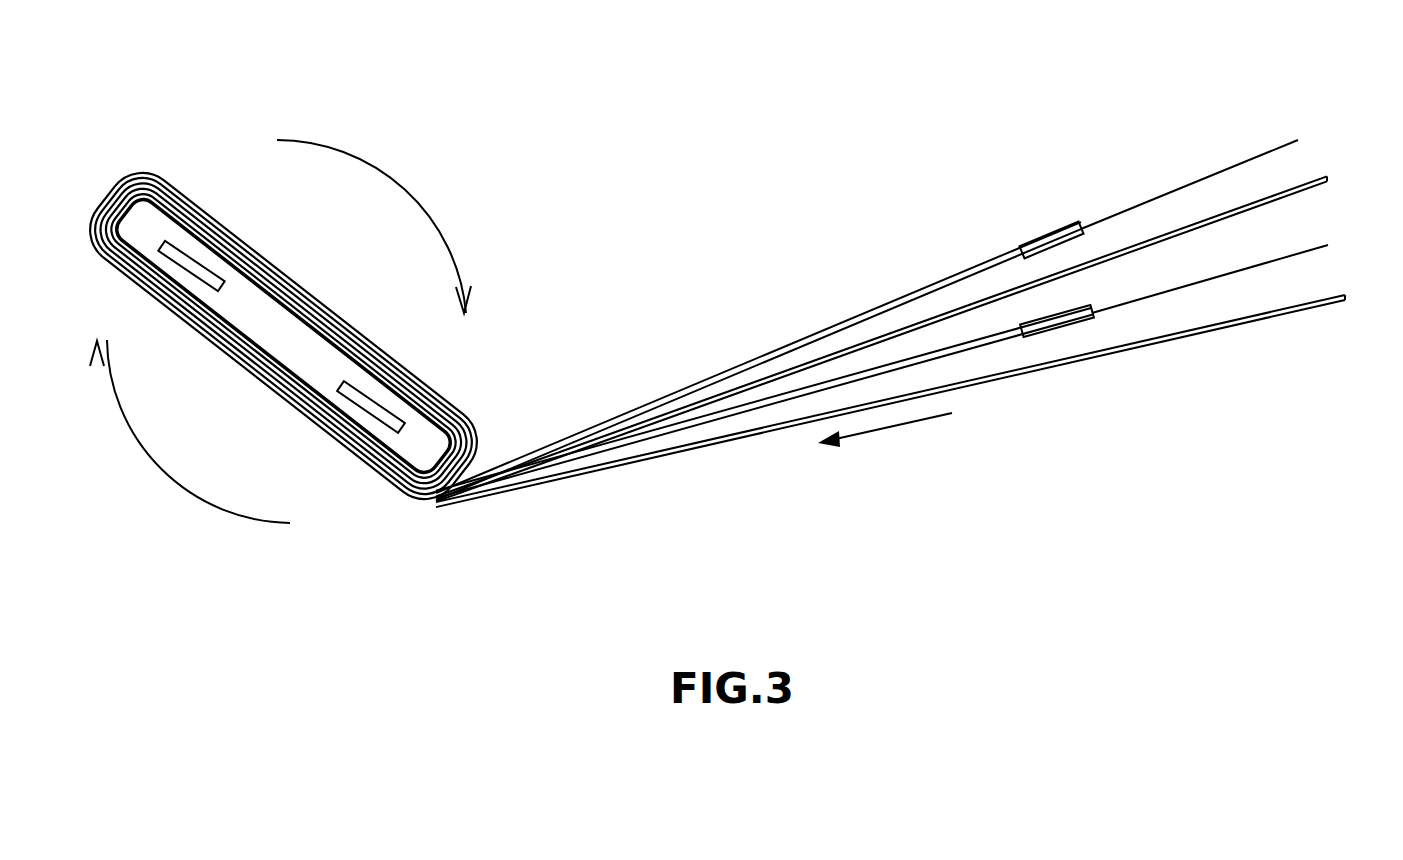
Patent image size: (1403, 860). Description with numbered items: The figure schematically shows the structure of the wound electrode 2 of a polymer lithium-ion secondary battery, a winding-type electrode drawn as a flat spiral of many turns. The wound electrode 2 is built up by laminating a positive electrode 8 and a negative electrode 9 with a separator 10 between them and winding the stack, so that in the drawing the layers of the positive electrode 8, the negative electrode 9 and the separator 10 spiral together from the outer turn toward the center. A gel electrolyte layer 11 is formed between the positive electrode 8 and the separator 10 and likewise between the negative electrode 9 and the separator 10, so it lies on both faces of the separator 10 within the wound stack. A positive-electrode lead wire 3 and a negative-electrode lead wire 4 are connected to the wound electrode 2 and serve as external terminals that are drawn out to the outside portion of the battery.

The wound electrode 2 is at (208, 166).
The positive-electrode lead wire 3 is at (172, 257).
The negative-electrode lead wire 4 is at (354, 404).
The positive electrode 8 is at (1278, 149).
The negative electrode 9 is at (1292, 250).
The separator 10 is at (1291, 193).
The gel electrolyte layer 11 is at (1058, 188).